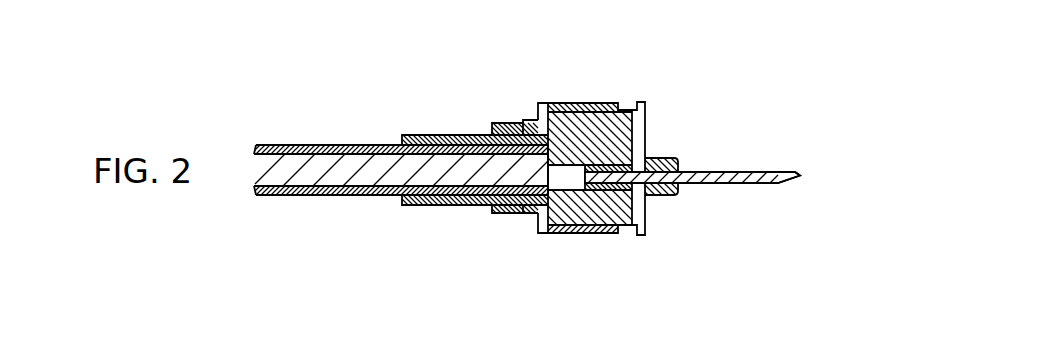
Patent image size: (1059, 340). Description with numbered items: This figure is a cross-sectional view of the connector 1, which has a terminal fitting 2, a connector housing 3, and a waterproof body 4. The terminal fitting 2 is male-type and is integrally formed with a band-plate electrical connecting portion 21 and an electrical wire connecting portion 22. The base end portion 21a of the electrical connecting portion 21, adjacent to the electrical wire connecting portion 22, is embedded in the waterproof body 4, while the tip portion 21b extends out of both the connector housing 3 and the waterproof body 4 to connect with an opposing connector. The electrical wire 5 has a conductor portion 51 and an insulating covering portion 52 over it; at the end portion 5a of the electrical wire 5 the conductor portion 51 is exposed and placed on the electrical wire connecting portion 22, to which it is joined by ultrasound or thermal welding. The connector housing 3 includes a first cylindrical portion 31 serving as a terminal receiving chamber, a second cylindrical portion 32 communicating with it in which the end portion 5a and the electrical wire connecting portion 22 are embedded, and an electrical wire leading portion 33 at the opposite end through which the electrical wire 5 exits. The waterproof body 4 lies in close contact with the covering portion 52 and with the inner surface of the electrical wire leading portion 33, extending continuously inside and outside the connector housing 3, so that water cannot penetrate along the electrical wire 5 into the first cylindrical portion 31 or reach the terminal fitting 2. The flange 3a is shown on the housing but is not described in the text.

The connector 1 is at (472, 80).
The terminal fitting 2 is at (762, 195).
The connector housing 3 is at (563, 250).
The hub flange 3a is at (637, 123).
The waterproof body 4 is at (422, 117).
The electrical wire 5 is at (320, 137).
The end portion of the electrical wire 5a is at (534, 130).
The electrical connecting portion 21 is at (693, 188).
The base end portion 21a is at (612, 227).
The tip portion 21b is at (726, 183).
The electrical wire connecting portion 22 is at (575, 222).
The first cylindrical portion 31 is at (580, 118).
The second cylindrical portion 32 is at (520, 130).
The electrical wire leading portion 33 is at (498, 217).
The conductor portion 51 is at (378, 170).
The covering portion 52 is at (338, 194).